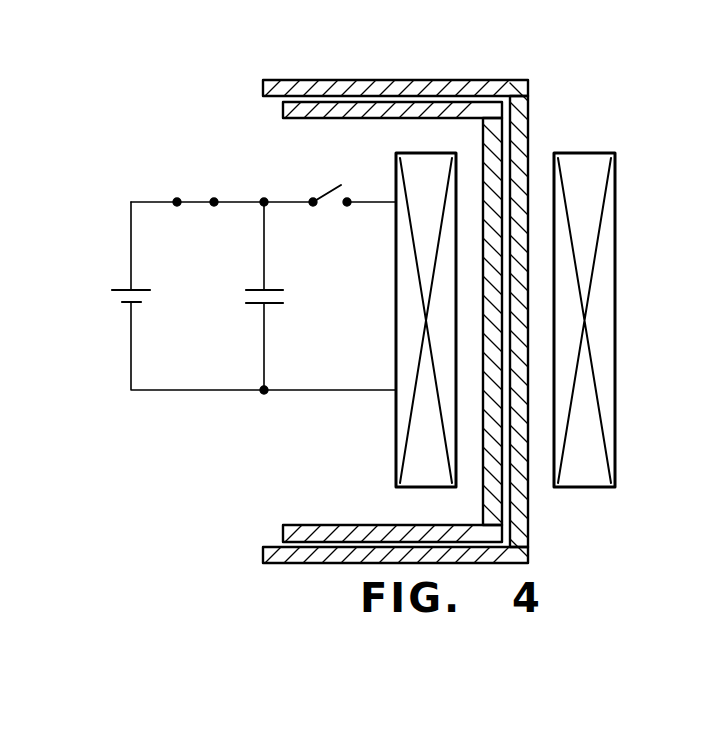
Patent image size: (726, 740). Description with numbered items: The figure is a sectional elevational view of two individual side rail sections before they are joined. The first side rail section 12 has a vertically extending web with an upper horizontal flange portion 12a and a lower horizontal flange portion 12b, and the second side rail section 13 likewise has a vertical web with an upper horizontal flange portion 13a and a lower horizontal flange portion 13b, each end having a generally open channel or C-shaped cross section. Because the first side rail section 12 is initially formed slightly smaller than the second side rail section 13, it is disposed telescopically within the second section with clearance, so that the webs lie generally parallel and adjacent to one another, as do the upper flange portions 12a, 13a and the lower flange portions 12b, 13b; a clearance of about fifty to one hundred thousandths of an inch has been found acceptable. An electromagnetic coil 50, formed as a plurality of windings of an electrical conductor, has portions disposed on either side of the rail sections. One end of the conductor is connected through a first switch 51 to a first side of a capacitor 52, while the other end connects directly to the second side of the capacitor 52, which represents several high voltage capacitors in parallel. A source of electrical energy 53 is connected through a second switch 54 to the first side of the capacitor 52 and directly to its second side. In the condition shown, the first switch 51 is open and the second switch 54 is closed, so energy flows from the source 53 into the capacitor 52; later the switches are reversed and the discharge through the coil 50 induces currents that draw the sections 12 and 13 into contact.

The first side rail section 12 is at (395, 302).
The upper horizontal flange portion 12a is at (290, 110).
The lower horizontal flange portion 12b is at (383, 523).
The second side rail section 13 is at (402, 300).
The upper horizontal flange portion 13a is at (340, 82).
The lower horizontal flange portion 13b is at (315, 565).
The electromagnetic coil 50 is at (612, 200).
The first switch 51 is at (325, 190).
The capacitor 52 is at (272, 290).
The source of electrical energy 53 is at (140, 290).
The second switch 54 is at (197, 200).